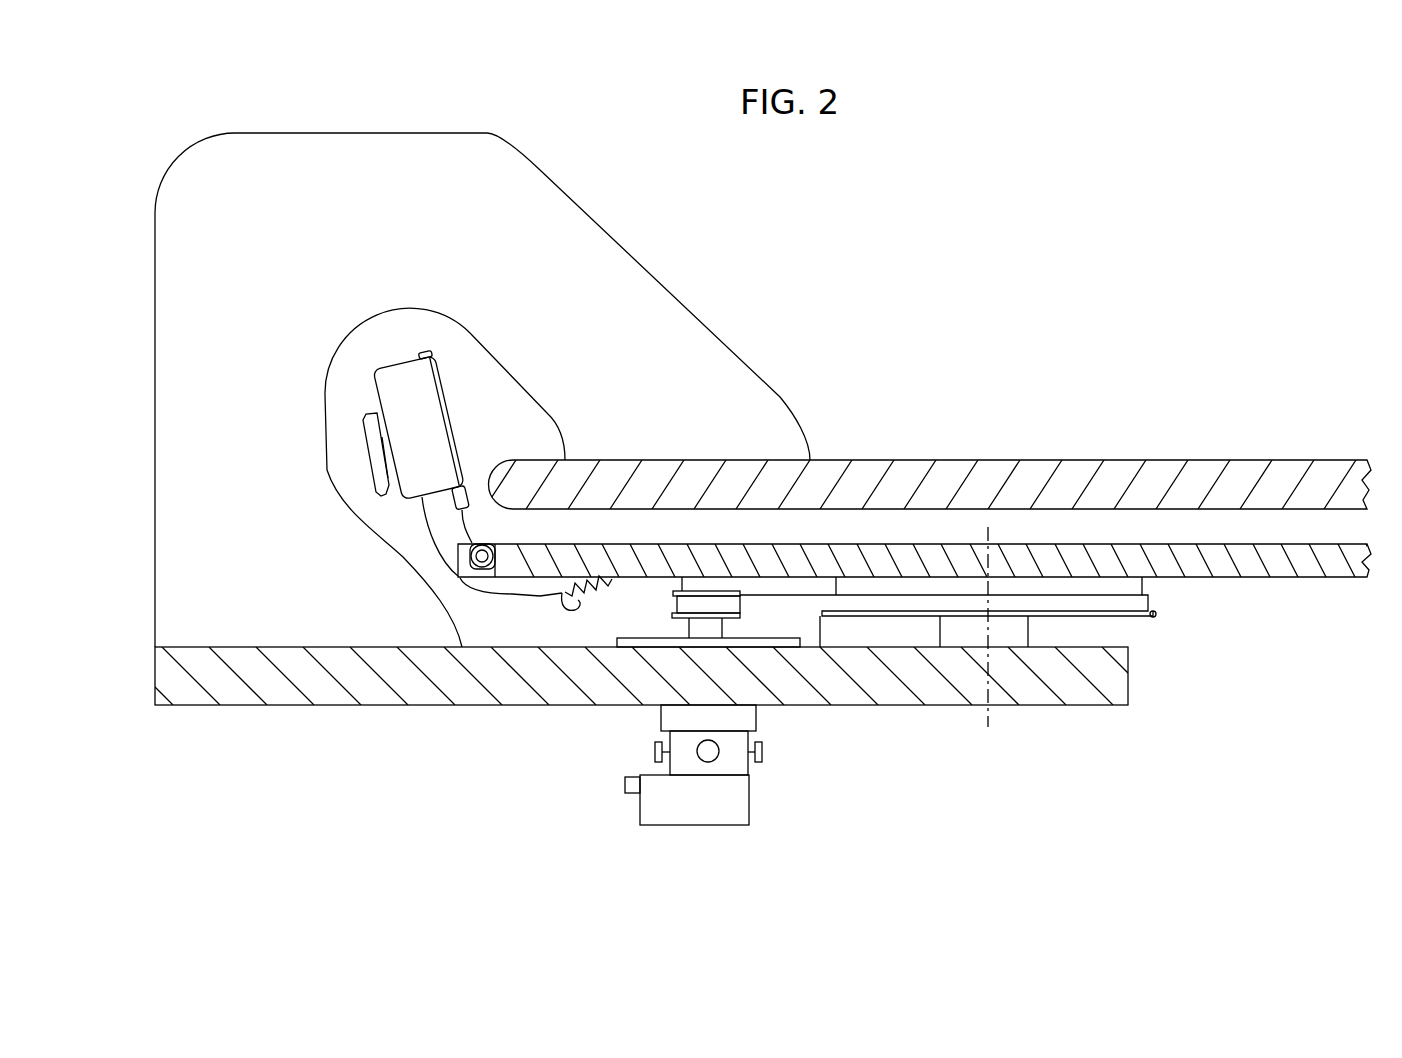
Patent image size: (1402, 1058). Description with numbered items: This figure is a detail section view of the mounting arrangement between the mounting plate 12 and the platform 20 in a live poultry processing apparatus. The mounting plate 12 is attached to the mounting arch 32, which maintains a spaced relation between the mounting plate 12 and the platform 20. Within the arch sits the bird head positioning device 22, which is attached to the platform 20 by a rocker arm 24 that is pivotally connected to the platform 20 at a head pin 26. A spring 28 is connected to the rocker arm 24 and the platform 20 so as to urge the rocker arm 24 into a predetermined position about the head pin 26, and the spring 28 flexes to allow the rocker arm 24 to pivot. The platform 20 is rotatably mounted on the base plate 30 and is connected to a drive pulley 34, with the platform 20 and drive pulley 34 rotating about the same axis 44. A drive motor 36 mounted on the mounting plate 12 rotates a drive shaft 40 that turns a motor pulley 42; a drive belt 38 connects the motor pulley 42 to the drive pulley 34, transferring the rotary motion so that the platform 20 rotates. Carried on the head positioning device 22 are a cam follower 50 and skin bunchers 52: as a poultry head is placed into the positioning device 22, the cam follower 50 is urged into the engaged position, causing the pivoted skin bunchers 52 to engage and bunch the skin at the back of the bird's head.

The mounting plate 12 is at (1072, 477).
The platform 20 is at (1268, 563).
The bird head positioning device 22 is at (405, 402).
The rocker arm 24 is at (512, 590).
The head pin 26 is at (458, 576).
The spring 28 is at (593, 605).
The base plate 30 is at (900, 697).
The mounting arch 32 is at (650, 320).
The drive pulley 34 is at (1153, 617).
The drive motor 36 is at (732, 747).
The drive belt 38 is at (783, 602).
The drive shaft 40 is at (700, 628).
The motor pulley 42 is at (718, 590).
The axis 44 is at (992, 697).
The cam follower 50 is at (453, 500).
The skin bunchers 52 is at (375, 442).